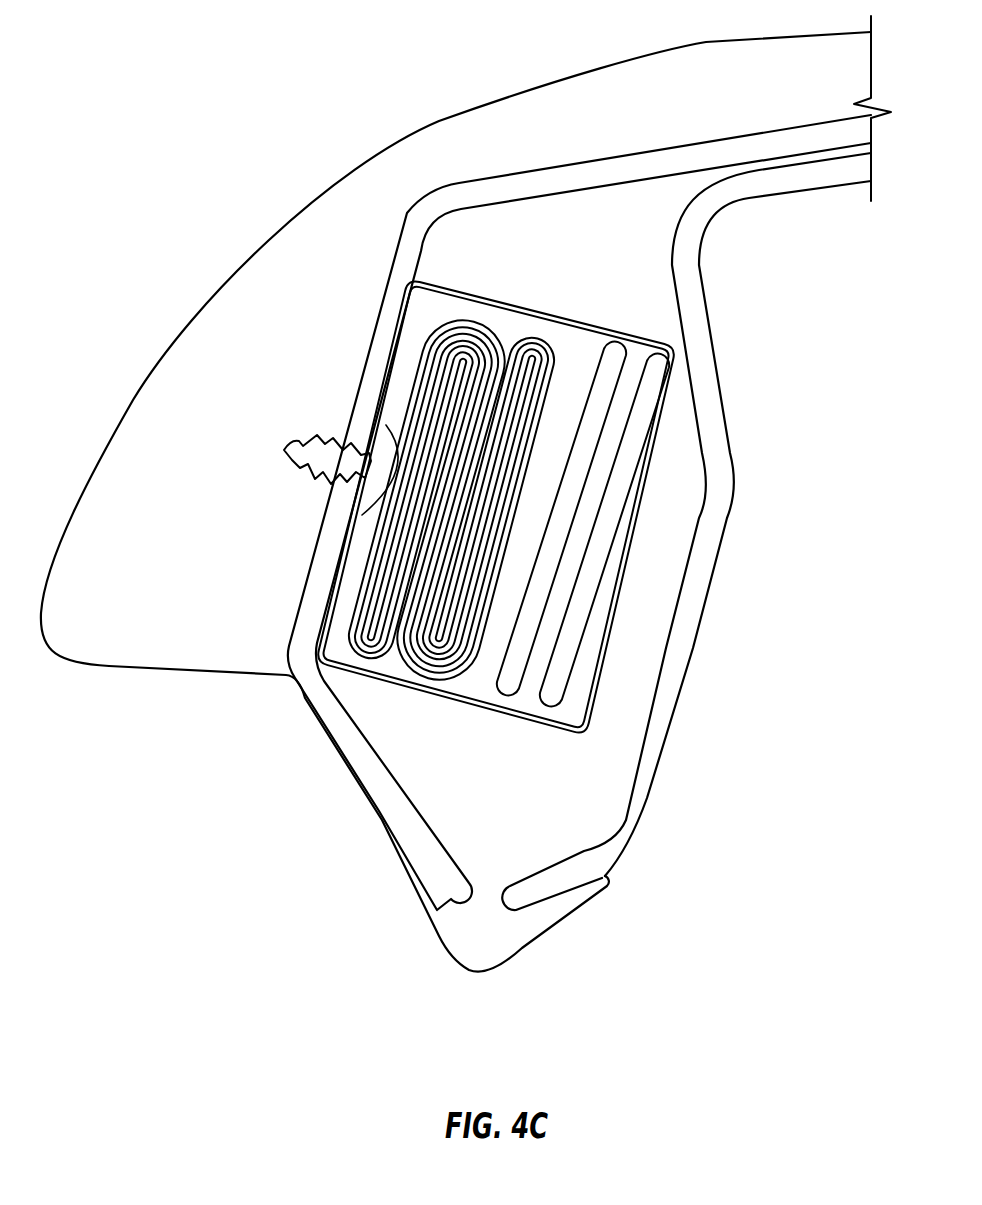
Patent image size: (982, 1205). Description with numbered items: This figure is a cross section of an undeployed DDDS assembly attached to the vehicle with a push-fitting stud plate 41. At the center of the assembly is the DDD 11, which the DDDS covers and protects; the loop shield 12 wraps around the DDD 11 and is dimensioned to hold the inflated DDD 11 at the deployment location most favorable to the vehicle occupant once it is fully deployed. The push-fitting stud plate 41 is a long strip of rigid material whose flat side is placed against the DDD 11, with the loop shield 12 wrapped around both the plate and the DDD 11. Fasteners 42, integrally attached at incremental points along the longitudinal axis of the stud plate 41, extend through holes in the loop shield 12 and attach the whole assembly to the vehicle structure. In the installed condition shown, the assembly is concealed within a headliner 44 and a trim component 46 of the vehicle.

The DDD 11 is at (436, 380).
The loop shield 12 is at (603, 528).
The push-fitting stud plate 41 is at (410, 315).
The fasteners 42 is at (285, 450).
The headliner 44 is at (672, 678).
The trim component 46 is at (468, 962).